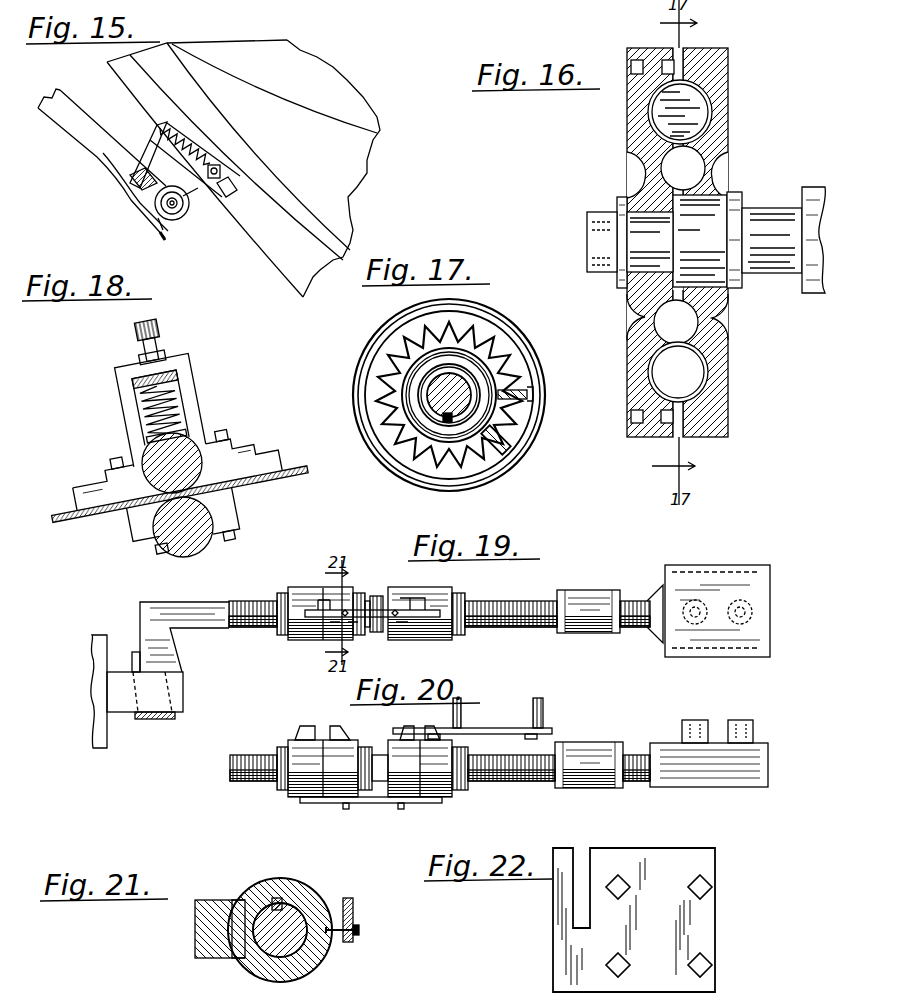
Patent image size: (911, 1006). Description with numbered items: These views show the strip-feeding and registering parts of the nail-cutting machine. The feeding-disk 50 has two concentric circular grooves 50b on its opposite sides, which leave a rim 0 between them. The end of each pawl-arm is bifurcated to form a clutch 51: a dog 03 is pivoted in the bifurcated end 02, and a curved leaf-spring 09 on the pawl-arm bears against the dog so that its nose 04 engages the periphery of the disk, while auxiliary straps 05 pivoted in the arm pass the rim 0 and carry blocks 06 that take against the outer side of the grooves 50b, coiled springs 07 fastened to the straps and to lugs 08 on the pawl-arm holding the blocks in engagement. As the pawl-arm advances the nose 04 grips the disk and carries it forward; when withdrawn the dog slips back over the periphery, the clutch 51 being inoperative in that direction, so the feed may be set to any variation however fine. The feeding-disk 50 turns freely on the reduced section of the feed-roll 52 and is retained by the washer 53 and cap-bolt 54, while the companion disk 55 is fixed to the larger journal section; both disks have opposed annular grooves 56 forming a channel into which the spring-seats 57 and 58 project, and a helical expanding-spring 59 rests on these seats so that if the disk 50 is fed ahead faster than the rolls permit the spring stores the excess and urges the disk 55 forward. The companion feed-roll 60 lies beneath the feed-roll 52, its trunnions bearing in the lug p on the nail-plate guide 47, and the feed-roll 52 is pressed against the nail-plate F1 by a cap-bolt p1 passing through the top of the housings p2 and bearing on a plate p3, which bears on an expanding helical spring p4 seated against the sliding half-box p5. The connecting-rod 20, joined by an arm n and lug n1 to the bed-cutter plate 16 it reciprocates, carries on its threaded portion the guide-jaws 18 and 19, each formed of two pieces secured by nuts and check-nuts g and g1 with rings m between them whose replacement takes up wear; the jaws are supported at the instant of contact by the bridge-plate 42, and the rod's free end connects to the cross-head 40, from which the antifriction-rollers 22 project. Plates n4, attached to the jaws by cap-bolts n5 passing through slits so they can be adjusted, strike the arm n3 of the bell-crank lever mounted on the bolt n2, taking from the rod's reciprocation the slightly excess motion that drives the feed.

In FIG. 15, the rim 0 is at (260, 248).
In FIG. 16, the rim 0 is at (632, 58).
In FIG. 17, the rim 0 is at (533, 447).
In FIG. 15, the feeding-disk 50 is at (365, 178).
In FIG. 16, the feeding-disk 50 is at (627, 298).
In FIG. 17, the feeding-disk 50 is at (520, 410).
In FIG. 15, the concentric circular grooves 50b is at (267, 224).
In FIG. 16, the concentric circular grooves 50b is at (668, 60).
In FIG. 15, the clutch 51 is at (193, 210).
In FIG. 16, the feed-roll 52 is at (738, 258).
In FIG. 18, the feed-roll 52 is at (195, 448).
In FIG. 16, the washer 53 is at (619, 283).
In FIG. 16, the cap-bolt 54 is at (588, 237).
In FIG. 16, the companion disk 55 is at (705, 195).
In FIG. 15, the opposed annular grooves 56 is at (312, 120).
In FIG. 16, the opposed annular grooves 56 is at (696, 118).
In FIG. 17, the spring-seat 57 is at (527, 390).
In FIG. 16, the spring-seat 58 is at (652, 115).
In FIG. 17, the spring-seat 58 is at (492, 440).
In FIG. 17, the helical expanding-spring 59 is at (455, 330).
In FIG. 18, the companion feed-roll 60 is at (208, 540).
In FIG. 18, the nail-plate guide 47 is at (97, 485).
In FIG. 18, the film strip F1 is at (296, 478).
In FIG. 18, the lug p is at (142, 526).
In FIG. 18, the cap-bolt p1 is at (160, 336).
In FIG. 18, the housings p2 is at (187, 370).
In FIG. 18, the plate p3 is at (137, 380).
In FIG. 18, the expanding helical spring p4 is at (180, 403).
In FIG. 18, the sliding half-box p5 is at (150, 438).
In FIG. 15, the bifurcated end 02 is at (133, 190).
In FIG. 15, the dog 03 is at (163, 217).
In FIG. 15, the nose 04 is at (186, 215).
In FIG. 15, the auxiliary arms or straps 05 is at (238, 190).
In FIG. 15, the blocks or lugs 06 is at (240, 180).
In FIG. 15, the coiled springs 07 is at (212, 137).
In FIG. 15, the lugs 08 is at (135, 148).
In FIG. 15, the curved leaf-spring 09 is at (130, 205).
In FIG. 19, the bed-cutter plate 16 is at (90, 694).
In FIG. 19, the guide-jaw 18 is at (300, 640).
In FIG. 20, the guide-jaw 18 is at (298, 797).
In FIG. 21, the guide-jaw 18 is at (300, 886).
In FIG. 19, the guide-jaw 19 is at (446, 640).
In FIG. 20, the guide-jaw 19 is at (452, 792).
In FIG. 19, the connecting-rod 20 is at (498, 598).
In FIG. 20, the connecting-rod 20 is at (510, 780).
In FIG. 21, the connecting-rod 20 is at (316, 946).
In FIG. 19, the antifriction-rollers 22 is at (748, 600).
In FIG. 20, the antifriction-rollers 22 is at (742, 720).
In FIG. 19, the cross-head 40 is at (700, 576).
In FIG. 20, the cross-head 40 is at (752, 780).
In FIG. 20, the bridge-plate 42 is at (548, 730).
In FIG. 22, the bridge-plate 42 is at (700, 866).
In FIG. 19, the nuts g is at (278, 618).
In FIG. 20, the nuts g is at (278, 785).
In FIG. 20, the nut g1 is at (364, 746).
In FIG. 19, the rings m is at (320, 604).
In FIG. 20, the rings m is at (322, 798).
In FIG. 19, the bracket n is at (165, 643).
In FIG. 19, the block n1 is at (180, 688).
In FIG. 19, the bolt n2 is at (140, 720).
In FIG. 19, the arm n3 is at (582, 590).
In FIG. 20, the arm n3 is at (588, 742).
In FIG. 19, the plates n4 is at (180, 670).
In FIG. 20, the plates n4 is at (368, 804).
In FIG. 21, the plates n4 is at (350, 906).
In FIG. 19, the cap-bolts n5 is at (360, 628).
In FIG. 20, the cap-bolts n5 is at (346, 810).
In FIG. 21, the cap-bolts n5 is at (358, 928).